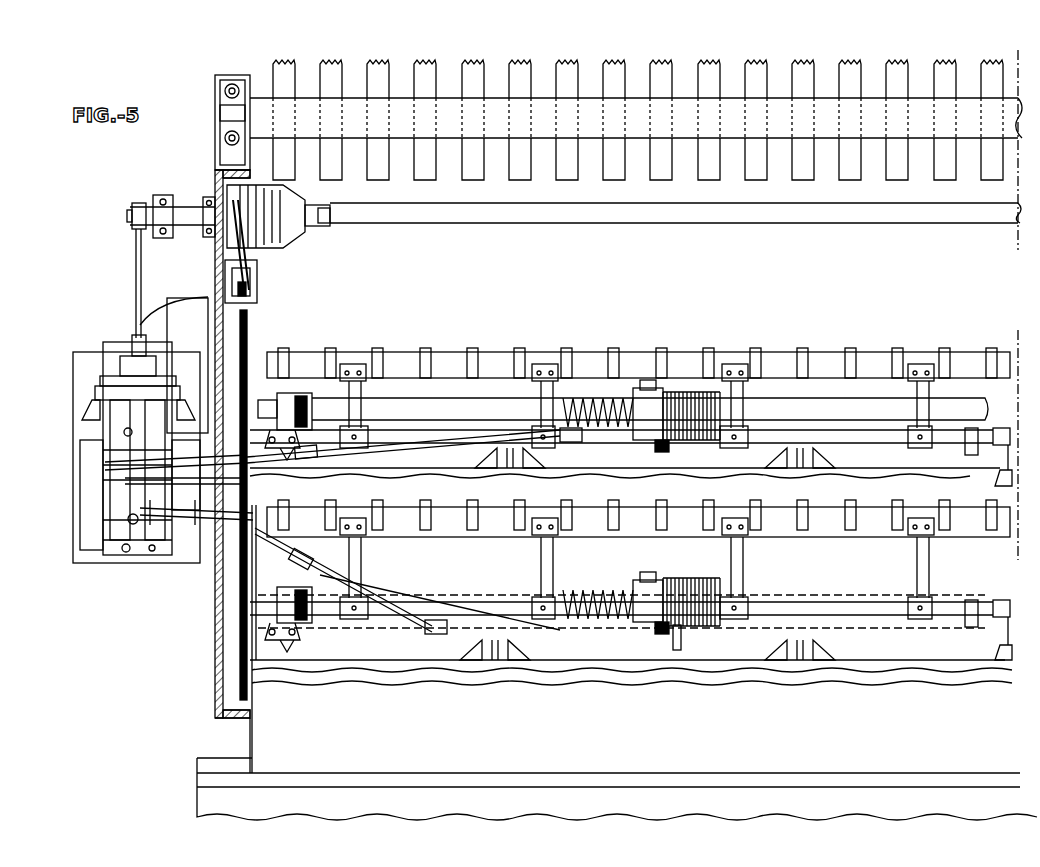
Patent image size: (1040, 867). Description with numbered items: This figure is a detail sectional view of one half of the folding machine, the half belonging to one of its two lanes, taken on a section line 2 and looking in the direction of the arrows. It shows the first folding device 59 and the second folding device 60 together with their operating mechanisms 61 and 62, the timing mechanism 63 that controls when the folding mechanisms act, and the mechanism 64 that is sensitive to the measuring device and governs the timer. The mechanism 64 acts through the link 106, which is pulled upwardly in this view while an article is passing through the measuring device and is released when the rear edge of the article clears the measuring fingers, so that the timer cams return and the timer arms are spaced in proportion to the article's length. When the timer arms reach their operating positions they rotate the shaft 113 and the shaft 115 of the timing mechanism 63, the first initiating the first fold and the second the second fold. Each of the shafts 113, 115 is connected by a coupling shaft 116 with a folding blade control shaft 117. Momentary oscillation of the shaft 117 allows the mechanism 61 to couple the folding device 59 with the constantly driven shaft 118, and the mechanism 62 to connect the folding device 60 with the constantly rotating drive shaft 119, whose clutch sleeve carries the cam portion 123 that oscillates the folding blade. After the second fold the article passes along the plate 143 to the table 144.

The section line 2- 2 is at (672, 53).
The first folding device 59 is at (491, 388).
The second folding device 60 is at (493, 530).
The operating mechanism 61 is at (652, 388).
The operating mechanism 62 is at (656, 582).
The timing mechanism 63 is at (73, 383).
The mechanism sensitive to the measuring device 64 is at (275, 246).
The link 106 is at (136, 276).
The shaft 113 is at (105, 462).
The shaft 115 is at (190, 540).
The coupling shaft 116 is at (302, 445).
The folding blade control shaft 117 is at (600, 441).
The constantly driven shaft 118 is at (388, 408).
The drive shaft 119 is at (374, 606).
The cam portion 123 is at (683, 646).
The plate 143 is at (608, 727).
The table 144 is at (603, 768).